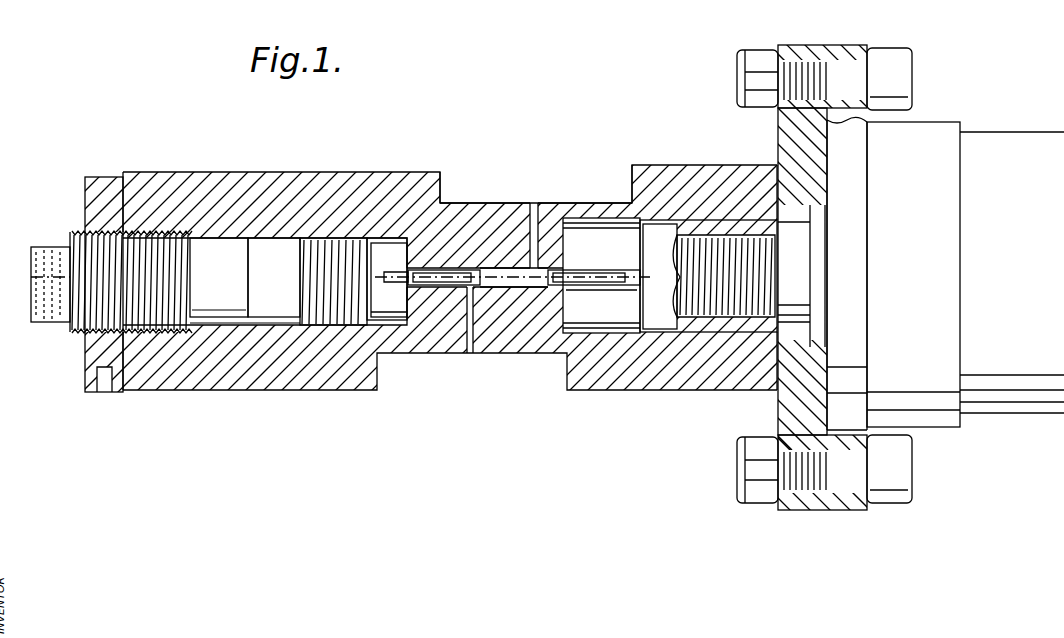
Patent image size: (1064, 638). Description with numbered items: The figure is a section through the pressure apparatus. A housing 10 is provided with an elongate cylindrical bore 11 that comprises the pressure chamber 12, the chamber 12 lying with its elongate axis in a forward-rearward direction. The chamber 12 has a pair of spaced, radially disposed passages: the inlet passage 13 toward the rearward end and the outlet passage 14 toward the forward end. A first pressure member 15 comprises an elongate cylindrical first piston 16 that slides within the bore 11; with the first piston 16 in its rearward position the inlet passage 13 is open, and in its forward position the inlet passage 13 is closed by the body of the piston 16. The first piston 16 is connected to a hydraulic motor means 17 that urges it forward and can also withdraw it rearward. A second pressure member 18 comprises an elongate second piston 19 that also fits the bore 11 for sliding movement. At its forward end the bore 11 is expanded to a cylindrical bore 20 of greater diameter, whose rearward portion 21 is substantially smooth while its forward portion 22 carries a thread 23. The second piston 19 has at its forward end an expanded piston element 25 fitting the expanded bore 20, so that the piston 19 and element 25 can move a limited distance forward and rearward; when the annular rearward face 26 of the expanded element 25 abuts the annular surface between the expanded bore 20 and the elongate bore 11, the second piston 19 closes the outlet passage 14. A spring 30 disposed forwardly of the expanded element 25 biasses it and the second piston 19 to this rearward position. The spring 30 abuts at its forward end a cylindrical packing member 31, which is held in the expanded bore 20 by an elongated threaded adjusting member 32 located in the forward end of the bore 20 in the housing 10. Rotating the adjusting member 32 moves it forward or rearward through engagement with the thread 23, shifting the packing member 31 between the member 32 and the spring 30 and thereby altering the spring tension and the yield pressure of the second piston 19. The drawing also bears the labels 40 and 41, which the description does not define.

The housing 10 is at (594, 207).
The elongate cylindrical bore 11 is at (460, 336).
The pressure chamber 12 is at (545, 287).
The inlet passage 13 is at (537, 204).
The outlet passage 14 is at (470, 356).
The first pressure member 15 is at (624, 256).
The first piston 16 is at (630, 296).
The hydraulic motor means 17 is at (946, 192).
The second pressure member 18 is at (452, 198).
The second piston 19 is at (517, 286).
The expanded bore 20 is at (396, 328).
The rearward portion of expanded bore 21 is at (338, 238).
The forward portion of expanded bore 22 is at (204, 236).
The thread 23 is at (198, 334).
The expanded piston element 25 is at (396, 240).
The annular rearward face 26 is at (452, 288).
The spring 30 is at (357, 334).
The cylindrical packing member 31 is at (277, 334).
The elongated threaded adjusting member 32 is at (165, 334).
The chamber 40 is at (611, 290).
The nozzle tip 41 is at (392, 271).